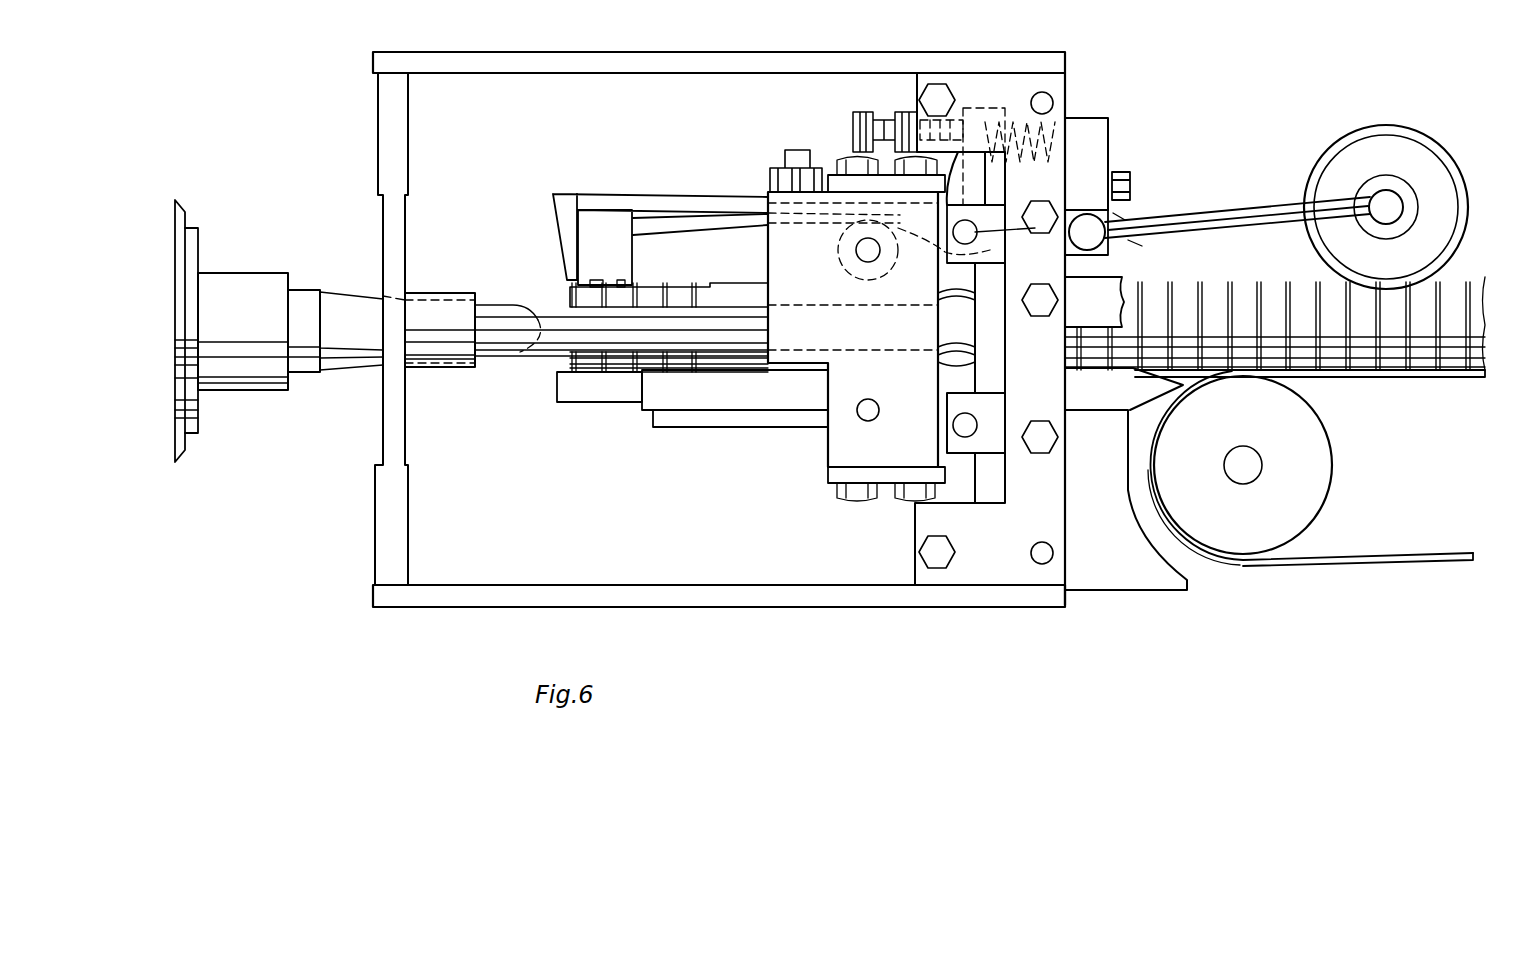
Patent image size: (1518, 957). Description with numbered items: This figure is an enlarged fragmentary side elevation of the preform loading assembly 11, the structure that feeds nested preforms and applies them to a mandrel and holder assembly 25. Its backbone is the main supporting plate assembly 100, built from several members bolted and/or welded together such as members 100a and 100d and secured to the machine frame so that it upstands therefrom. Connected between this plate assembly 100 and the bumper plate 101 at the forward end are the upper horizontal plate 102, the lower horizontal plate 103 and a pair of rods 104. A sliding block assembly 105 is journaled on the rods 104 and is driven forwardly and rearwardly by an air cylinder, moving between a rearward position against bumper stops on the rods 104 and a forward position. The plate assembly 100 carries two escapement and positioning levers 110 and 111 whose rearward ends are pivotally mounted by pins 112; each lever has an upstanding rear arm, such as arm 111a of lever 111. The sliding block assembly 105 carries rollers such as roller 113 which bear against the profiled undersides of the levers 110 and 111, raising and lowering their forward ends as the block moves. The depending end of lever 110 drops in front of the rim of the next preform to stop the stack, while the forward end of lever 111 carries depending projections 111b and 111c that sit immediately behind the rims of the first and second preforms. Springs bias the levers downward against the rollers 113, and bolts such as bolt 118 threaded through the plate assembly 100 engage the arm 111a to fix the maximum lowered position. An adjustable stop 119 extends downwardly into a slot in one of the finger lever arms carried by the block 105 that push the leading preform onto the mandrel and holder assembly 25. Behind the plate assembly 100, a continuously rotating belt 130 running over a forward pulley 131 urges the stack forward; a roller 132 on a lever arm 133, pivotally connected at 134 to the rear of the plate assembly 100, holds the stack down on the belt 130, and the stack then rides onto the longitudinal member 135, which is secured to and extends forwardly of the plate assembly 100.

The preform loading assembly 11 is at (1080, 97).
The mandrel and holder assembly 25 is at (243, 272).
The main supporting plate assembly 100 is at (992, 483).
The plate assembly member 100a is at (1052, 523).
The plate assembly member 100d is at (1135, 590).
The bumper plate 101 is at (378, 112).
The upper horizontal plate 102 is at (735, 53).
The lower horizontal plate 103 is at (845, 607).
The rods 104 is at (547, 345).
The sliding block assembly 105 is at (828, 443).
The escapement and positioning lever 110 is at (605, 196).
The escapement and positioning lever 111 is at (699, 230).
The upstanding arm 111a is at (630, 287).
The depending projection 111b is at (578, 283).
The depending projection 111c is at (617, 287).
The pins 112 is at (998, 234).
The roller 113 is at (840, 250).
The bolt 118 is at (880, 120).
The adjustable stop 119 is at (797, 152).
The belt 130 is at (1420, 377).
The forward pulley 131 is at (1322, 459).
The roller 132 is at (1332, 152).
The lever arm 133 is at (1240, 210).
The pivotal connection 134 is at (1096, 240).
The longitudinal member 135 is at (590, 401).